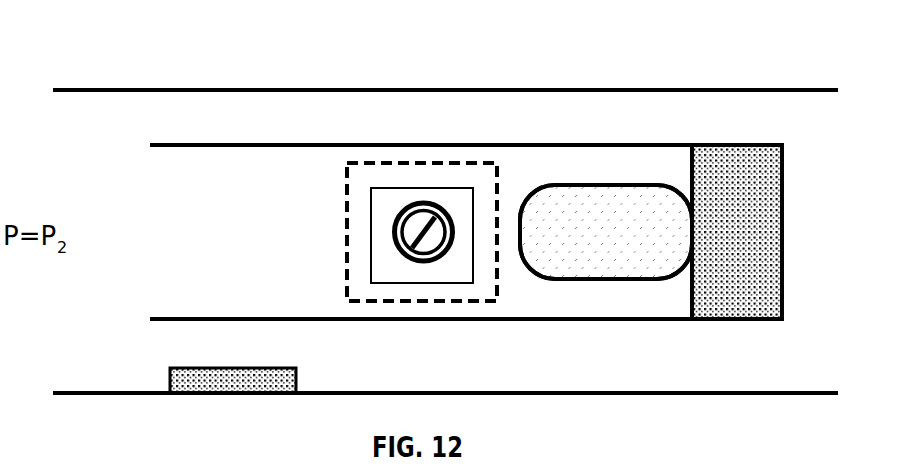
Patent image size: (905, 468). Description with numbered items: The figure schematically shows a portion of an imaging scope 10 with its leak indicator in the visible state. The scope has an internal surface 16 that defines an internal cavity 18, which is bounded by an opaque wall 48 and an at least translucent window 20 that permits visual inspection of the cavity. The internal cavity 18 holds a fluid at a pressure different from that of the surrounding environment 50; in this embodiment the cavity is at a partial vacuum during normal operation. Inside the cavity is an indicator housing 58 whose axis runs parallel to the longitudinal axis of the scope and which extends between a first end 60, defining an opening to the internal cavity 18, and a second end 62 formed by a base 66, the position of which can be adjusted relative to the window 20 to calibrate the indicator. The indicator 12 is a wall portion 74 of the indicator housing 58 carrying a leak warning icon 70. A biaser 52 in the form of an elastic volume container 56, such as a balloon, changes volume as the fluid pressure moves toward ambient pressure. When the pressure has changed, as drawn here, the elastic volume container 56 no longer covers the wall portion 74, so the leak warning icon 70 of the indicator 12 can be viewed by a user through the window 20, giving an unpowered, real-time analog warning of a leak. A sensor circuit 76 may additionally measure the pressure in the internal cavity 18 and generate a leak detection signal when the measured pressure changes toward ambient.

The imaging scope 10 is at (169, 72).
The indicator 12 is at (410, 117).
The internal surface 16 is at (730, 391).
The internal cavity 18 is at (656, 129).
The window 20 is at (364, 162).
The wall 48 is at (731, 88).
The surrounding environment 50 is at (654, 69).
The biaser 52 is at (603, 183).
The elastic volume container 56 is at (606, 195).
The indicator housing 58 is at (516, 143).
The first end 60 is at (133, 165).
The second end 62 is at (805, 178).
The base 66 is at (743, 157).
The leak warning icon 70 is at (426, 264).
The wall portion 74 is at (428, 200).
The sensor circuit 76 is at (263, 390).